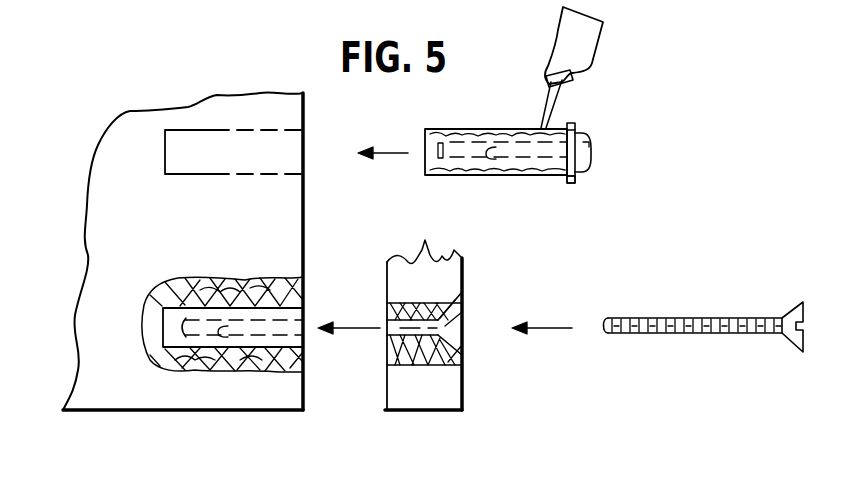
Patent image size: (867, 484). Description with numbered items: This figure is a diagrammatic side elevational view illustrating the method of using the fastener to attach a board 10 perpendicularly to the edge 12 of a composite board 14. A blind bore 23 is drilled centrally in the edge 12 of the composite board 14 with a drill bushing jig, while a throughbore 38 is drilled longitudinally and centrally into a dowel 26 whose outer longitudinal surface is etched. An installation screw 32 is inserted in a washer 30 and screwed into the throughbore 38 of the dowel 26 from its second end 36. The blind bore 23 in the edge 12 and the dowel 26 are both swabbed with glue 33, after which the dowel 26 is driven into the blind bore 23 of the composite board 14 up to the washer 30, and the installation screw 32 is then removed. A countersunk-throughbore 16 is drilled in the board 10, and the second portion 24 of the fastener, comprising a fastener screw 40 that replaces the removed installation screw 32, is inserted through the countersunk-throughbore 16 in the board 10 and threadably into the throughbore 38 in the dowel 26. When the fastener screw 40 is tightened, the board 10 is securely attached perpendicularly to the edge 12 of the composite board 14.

The board 10 is at (436, 409).
The edge 12 is at (303, 163).
The composite board 14 is at (125, 165).
The countersunk-throughbore 16 is at (460, 337).
The blind bore 23 is at (203, 138).
The second portion 24 is at (662, 314).
The dowel 26 is at (473, 126).
The washer 30 is at (572, 183).
The installation screw 32 is at (592, 150).
The glue 33 is at (500, 130).
The second end 36 is at (572, 127).
The throughbore 38 is at (491, 177).
The fastener screw 40 is at (747, 318).